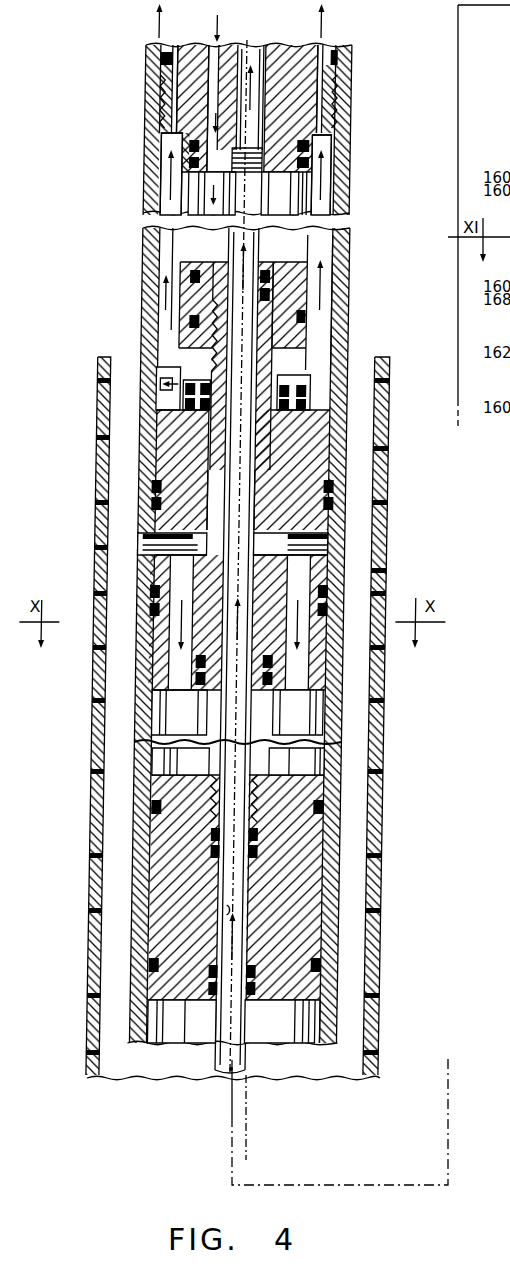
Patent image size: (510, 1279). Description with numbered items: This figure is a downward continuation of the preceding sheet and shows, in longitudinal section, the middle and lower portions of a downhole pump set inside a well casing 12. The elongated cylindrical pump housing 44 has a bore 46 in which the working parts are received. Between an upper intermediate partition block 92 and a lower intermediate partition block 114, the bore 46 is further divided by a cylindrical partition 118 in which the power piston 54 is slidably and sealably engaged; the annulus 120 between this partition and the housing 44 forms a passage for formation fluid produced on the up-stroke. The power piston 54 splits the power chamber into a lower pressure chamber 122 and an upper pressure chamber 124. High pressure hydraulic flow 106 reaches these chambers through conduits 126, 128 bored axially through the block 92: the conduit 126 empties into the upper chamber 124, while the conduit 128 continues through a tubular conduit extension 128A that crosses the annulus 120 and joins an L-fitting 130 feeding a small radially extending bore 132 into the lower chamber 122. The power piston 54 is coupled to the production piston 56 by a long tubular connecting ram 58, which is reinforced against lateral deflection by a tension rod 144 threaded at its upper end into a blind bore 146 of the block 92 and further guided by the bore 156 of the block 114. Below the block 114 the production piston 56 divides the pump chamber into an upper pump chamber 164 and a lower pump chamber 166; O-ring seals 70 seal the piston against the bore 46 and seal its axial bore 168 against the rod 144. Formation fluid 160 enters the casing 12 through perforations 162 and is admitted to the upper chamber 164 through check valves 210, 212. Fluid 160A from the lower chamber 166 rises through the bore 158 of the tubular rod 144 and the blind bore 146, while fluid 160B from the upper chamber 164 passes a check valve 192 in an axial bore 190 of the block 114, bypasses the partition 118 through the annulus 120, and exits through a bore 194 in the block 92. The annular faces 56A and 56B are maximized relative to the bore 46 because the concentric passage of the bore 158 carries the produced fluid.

The well casing 12 is at (398, 411).
The pump housing 44 is at (138, 155).
The bore 46 is at (330, 1025).
The power piston 54 is at (330, 311).
The production piston 56 is at (291, 895).
The annular face 56A is at (330, 767).
The annular face 56B is at (263, 1025).
The tubular connecting ram 58 is at (176, 806).
The O-ring seals 70 is at (158, 56).
The intermediate partition block 92 is at (300, 85).
The high pressure hydraulic flow 106 is at (222, 1).
The intermediate partition block 114 is at (353, 460).
The cylindrical partition 118 is at (310, 193).
The annulus 120 is at (320, 320).
The lower pressure chamber 122 is at (198, 346).
The upper pressure chamber 124 is at (270, 202).
The conduit 126 is at (179, 70).
The conduit 128 is at (216, 45).
The tubular conduit extension 128A is at (174, 281).
The L-fitting 130 is at (163, 384).
The radially extending bore 132 is at (235, 403).
The tension rod 144 is at (262, 1055).
The blind bore 146 is at (255, 55).
The bore 156 is at (276, 480).
The bore 158 is at (248, 1070).
The formation fluid 160 is at (96, 380).
The formation fluid 160A is at (250, 108).
The formation fluid 160B is at (326, 30).
The perforations 162 is at (102, 507).
The upper pump chamber 164 is at (281, 719).
The lower pump chamber 166 is at (198, 1028).
The bore 168 is at (240, 914).
The bore 190 is at (232, 475).
The check valve 192 is at (320, 631).
The bore 194 is at (318, 54).
The check valve 210 is at (185, 679).
The check valve 212 is at (286, 534).